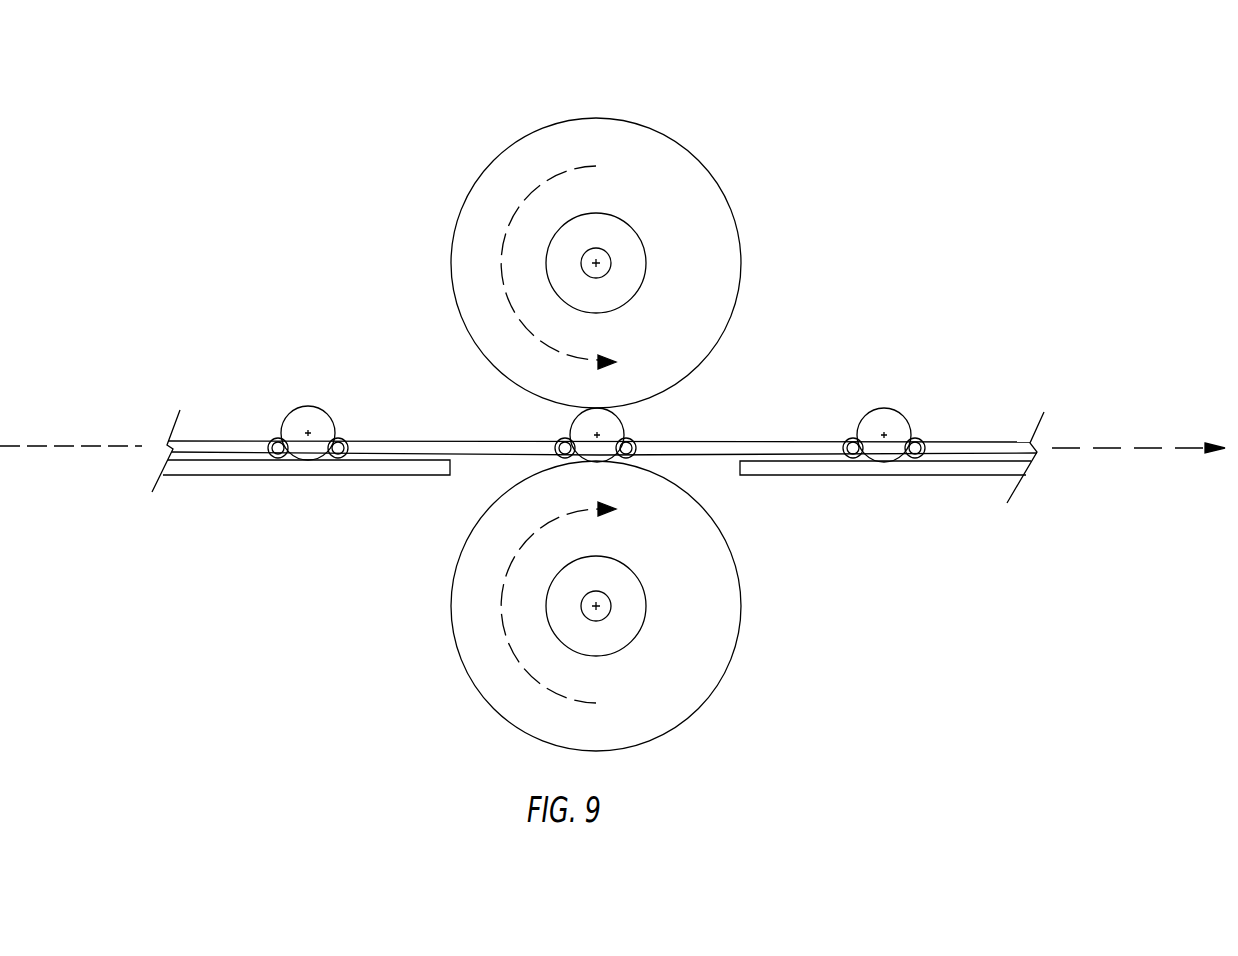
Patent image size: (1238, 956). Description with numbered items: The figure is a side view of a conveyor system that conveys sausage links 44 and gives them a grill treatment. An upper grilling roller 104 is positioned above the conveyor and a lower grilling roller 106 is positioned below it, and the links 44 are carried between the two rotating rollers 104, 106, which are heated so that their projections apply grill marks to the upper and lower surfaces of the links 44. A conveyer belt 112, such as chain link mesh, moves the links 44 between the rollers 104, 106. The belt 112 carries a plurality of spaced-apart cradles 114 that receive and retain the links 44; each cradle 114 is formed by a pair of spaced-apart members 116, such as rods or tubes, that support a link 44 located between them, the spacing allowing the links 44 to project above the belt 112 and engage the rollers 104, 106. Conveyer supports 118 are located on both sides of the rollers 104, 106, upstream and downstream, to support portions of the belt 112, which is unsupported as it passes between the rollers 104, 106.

The upper grilling roller 104 is at (599, 117).
The lower grilling roller 106 is at (713, 690).
The conveyer belt 112 is at (705, 440).
The cradle 114 is at (305, 495).
The conveyer support 118 is at (230, 475).
The sausage link 44 is at (311, 407).
The spaced-apart member 116 is at (842, 455).